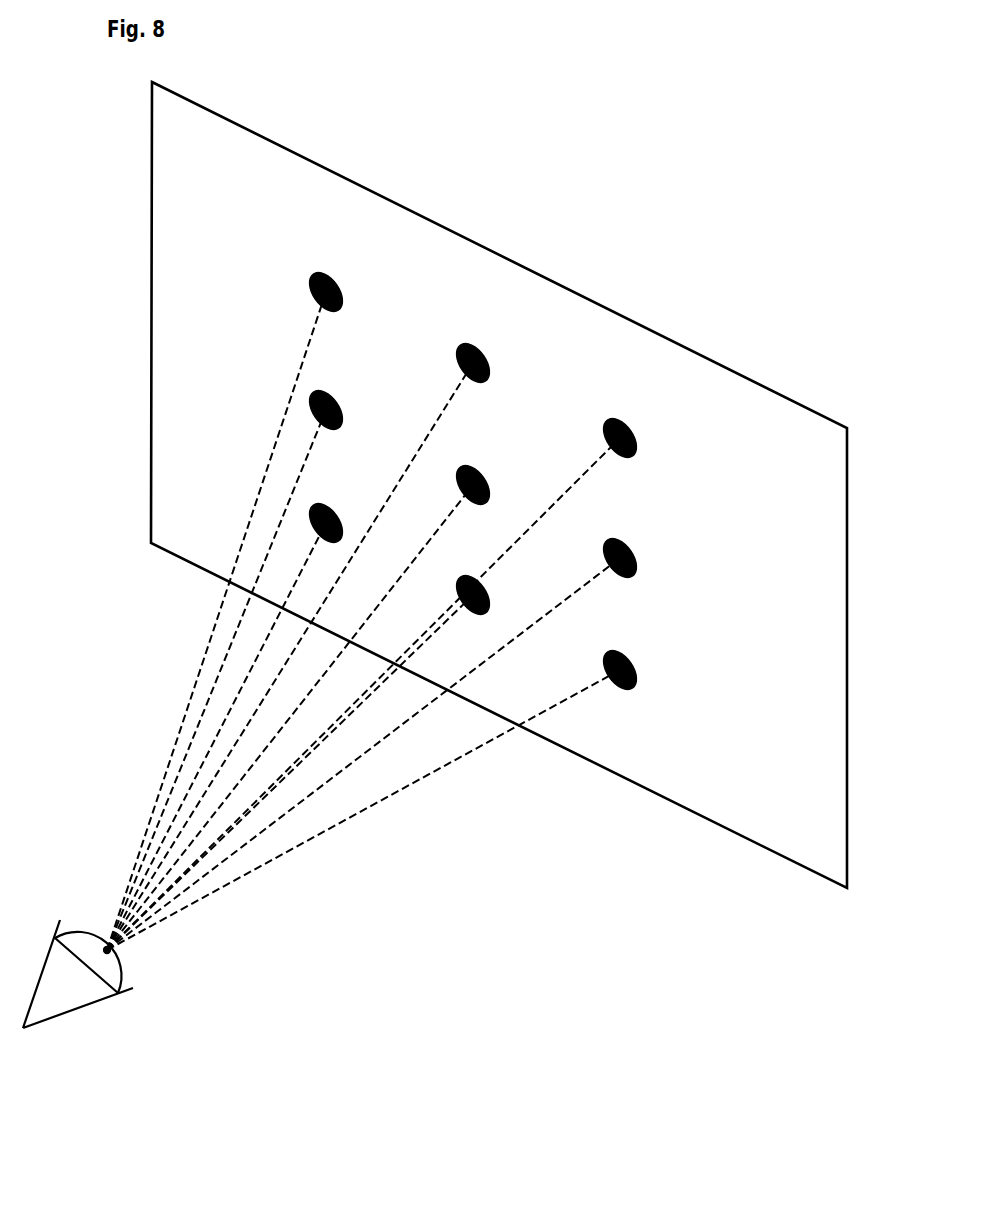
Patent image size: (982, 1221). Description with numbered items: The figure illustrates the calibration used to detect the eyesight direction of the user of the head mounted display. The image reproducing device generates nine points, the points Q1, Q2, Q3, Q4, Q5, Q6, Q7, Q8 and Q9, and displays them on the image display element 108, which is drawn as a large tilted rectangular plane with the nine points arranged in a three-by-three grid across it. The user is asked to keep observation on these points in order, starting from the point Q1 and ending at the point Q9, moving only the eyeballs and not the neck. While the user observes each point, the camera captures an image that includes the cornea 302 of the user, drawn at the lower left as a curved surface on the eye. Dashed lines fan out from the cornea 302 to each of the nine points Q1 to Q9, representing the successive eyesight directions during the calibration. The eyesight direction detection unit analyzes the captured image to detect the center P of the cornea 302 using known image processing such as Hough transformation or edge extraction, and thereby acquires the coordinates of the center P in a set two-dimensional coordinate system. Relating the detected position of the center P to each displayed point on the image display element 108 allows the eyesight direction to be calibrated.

The image display element 108 is at (808, 410).
The cornea 302 is at (80, 945).
The center of the cornea P is at (128, 958).
The point Q1 is at (337, 282).
The point Q2 is at (484, 353).
The point Q3 is at (638, 437).
The point Q4 is at (337, 402).
The point Q5 is at (484, 477).
The point Q6 is at (638, 556).
The point Q7 is at (337, 514).
The point Q8 is at (487, 588).
The point Q9 is at (638, 668).